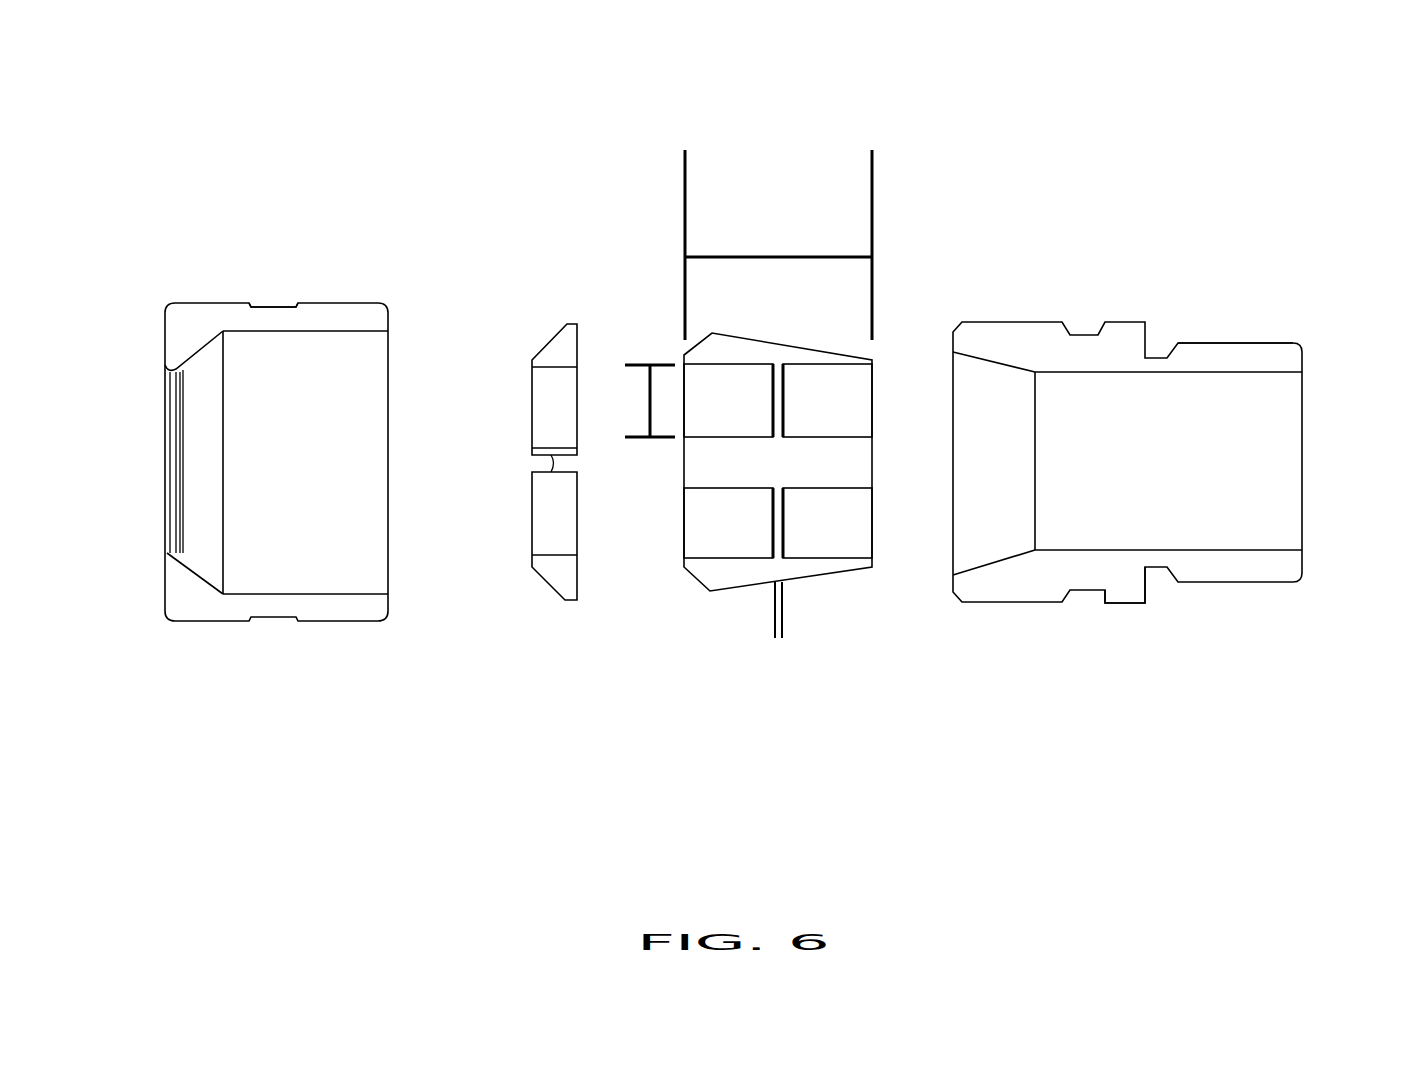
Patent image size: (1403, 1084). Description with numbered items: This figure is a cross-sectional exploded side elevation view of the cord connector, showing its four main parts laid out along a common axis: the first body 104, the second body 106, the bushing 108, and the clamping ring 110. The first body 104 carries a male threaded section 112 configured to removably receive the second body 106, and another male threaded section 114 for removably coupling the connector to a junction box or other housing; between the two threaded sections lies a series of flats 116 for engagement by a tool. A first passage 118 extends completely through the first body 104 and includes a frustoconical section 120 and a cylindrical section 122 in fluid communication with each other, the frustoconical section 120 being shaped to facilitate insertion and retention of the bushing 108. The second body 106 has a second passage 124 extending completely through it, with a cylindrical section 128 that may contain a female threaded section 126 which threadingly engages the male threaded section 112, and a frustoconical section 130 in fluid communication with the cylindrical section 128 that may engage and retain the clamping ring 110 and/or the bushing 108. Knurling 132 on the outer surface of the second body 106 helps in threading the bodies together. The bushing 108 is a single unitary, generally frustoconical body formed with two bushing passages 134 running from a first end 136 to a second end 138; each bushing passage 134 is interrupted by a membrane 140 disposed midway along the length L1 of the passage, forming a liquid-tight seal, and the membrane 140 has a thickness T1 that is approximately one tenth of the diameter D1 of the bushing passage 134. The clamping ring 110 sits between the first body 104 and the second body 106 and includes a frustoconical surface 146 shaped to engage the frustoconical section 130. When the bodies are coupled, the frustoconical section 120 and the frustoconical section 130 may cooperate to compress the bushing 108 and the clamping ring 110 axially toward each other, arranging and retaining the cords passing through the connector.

The first body 104 is at (1080, 348).
The second body 106 is at (273, 617).
The bushing 108 is at (722, 578).
The clamping ring 110 is at (563, 349).
The male threaded section 112 is at (988, 323).
The male threaded section 114 is at (1223, 343).
The series of flats 116 is at (1130, 605).
The first passage 118 is at (1160, 511).
The frustoconical section 120 is at (993, 538).
The cylindrical section 122 is at (1241, 430).
The second passage 124 is at (270, 390).
The female threaded section 126 is at (360, 350).
The cylindrical section 128 is at (340, 540).
The frustoconical section 130 is at (192, 556).
The knurling 132 is at (320, 303).
The bushing passages 134 is at (718, 396).
The first end 136 is at (680, 571).
The second end 138 is at (875, 362).
The membrane 140 is at (783, 408).
The frustoconical surface 146 is at (547, 579).
The diameter D1 is at (645, 407).
The length L1 is at (762, 257).
The thickness T1 is at (778, 641).